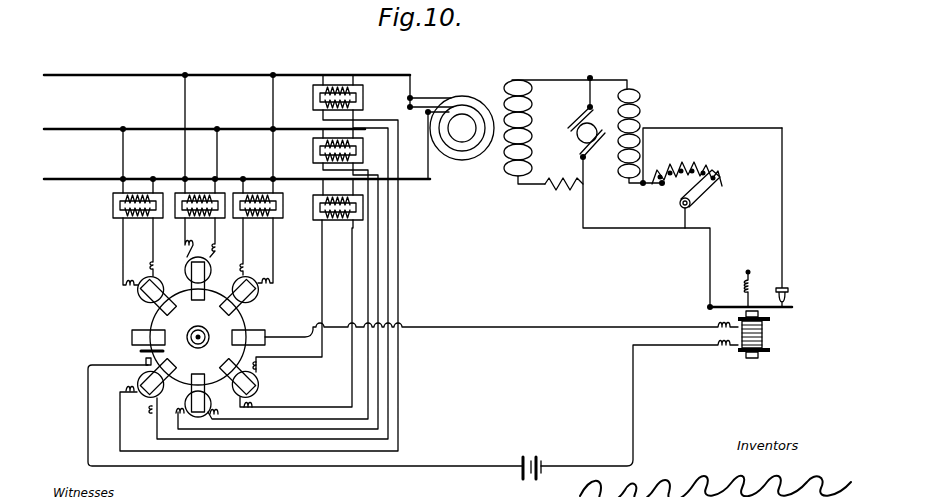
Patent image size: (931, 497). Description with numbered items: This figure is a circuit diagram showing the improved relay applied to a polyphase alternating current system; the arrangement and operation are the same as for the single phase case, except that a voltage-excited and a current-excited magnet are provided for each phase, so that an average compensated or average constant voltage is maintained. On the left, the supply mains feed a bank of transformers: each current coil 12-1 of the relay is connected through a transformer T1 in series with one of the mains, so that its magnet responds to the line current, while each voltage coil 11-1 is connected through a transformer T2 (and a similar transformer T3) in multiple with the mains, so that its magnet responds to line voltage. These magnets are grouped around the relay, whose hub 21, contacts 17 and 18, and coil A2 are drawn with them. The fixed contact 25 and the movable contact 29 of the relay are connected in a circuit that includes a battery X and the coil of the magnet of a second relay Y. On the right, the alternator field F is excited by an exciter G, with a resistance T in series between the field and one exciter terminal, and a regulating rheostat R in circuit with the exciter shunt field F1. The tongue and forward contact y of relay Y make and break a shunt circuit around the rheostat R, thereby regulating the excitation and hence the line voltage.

The voltage-excited relay magnet coil 11-1 is at (156, 303).
The current-excited relay magnet coil 12-1 is at (258, 390).
The contact 17 is at (132, 337).
The contact 18 is at (265, 339).
The rotary switch hub 21 is at (190, 330).
The fixed contact 25 is at (141, 369).
The movable contact 29 is at (141, 351).
The transformer T1 is at (322, 160).
The transformer T2 is at (185, 214).
The transformer T'3 T3 is at (192, 214).
The coil A2 is at (462, 161).
The field of the alternator F is at (565, 132).
The shunt field of the exciter F1 is at (640, 120).
The exciter G is at (631, 191).
The regulating rheostat R is at (687, 180).
The resistance T is at (566, 189).
The battery X is at (630, 410).
The relay Y is at (765, 334).
The armature contact y is at (749, 219).